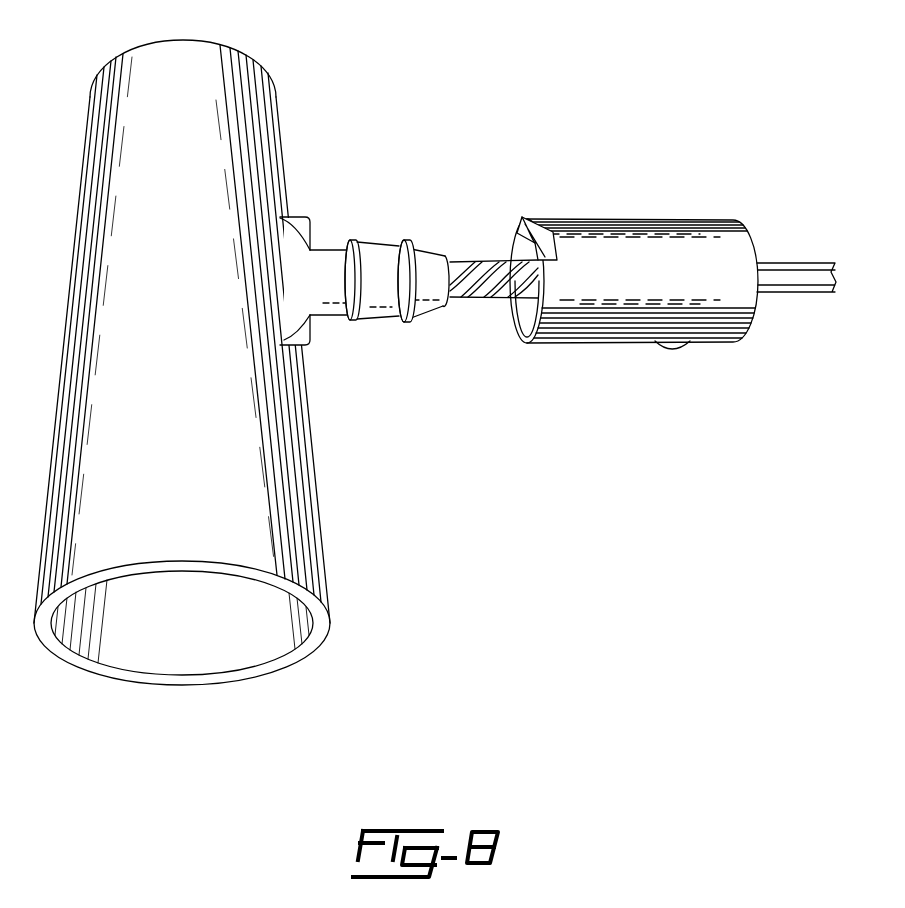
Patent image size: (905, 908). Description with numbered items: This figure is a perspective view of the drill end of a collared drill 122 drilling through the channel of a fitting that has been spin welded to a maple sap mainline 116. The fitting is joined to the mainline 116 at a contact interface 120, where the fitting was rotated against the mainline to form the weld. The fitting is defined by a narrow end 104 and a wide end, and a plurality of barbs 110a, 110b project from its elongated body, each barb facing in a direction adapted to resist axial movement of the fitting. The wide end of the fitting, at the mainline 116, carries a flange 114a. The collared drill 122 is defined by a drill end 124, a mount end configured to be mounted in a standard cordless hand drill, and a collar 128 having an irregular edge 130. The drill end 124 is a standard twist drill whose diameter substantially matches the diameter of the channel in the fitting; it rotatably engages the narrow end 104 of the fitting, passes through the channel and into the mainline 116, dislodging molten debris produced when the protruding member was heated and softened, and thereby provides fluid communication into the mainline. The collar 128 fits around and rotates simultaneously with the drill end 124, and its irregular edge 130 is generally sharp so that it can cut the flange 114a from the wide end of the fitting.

The mainline 116 is at (255, 118).
The contact interface 120 is at (295, 248).
The flange 114a is at (305, 325).
The barb 110a is at (367, 255).
The barb 110b is at (422, 257).
The narrow end 104 is at (443, 307).
The drill end 124 is at (482, 268).
The irregular edge 130 is at (545, 228).
The collar 128 is at (647, 238).
The collared drill 122 is at (673, 326).